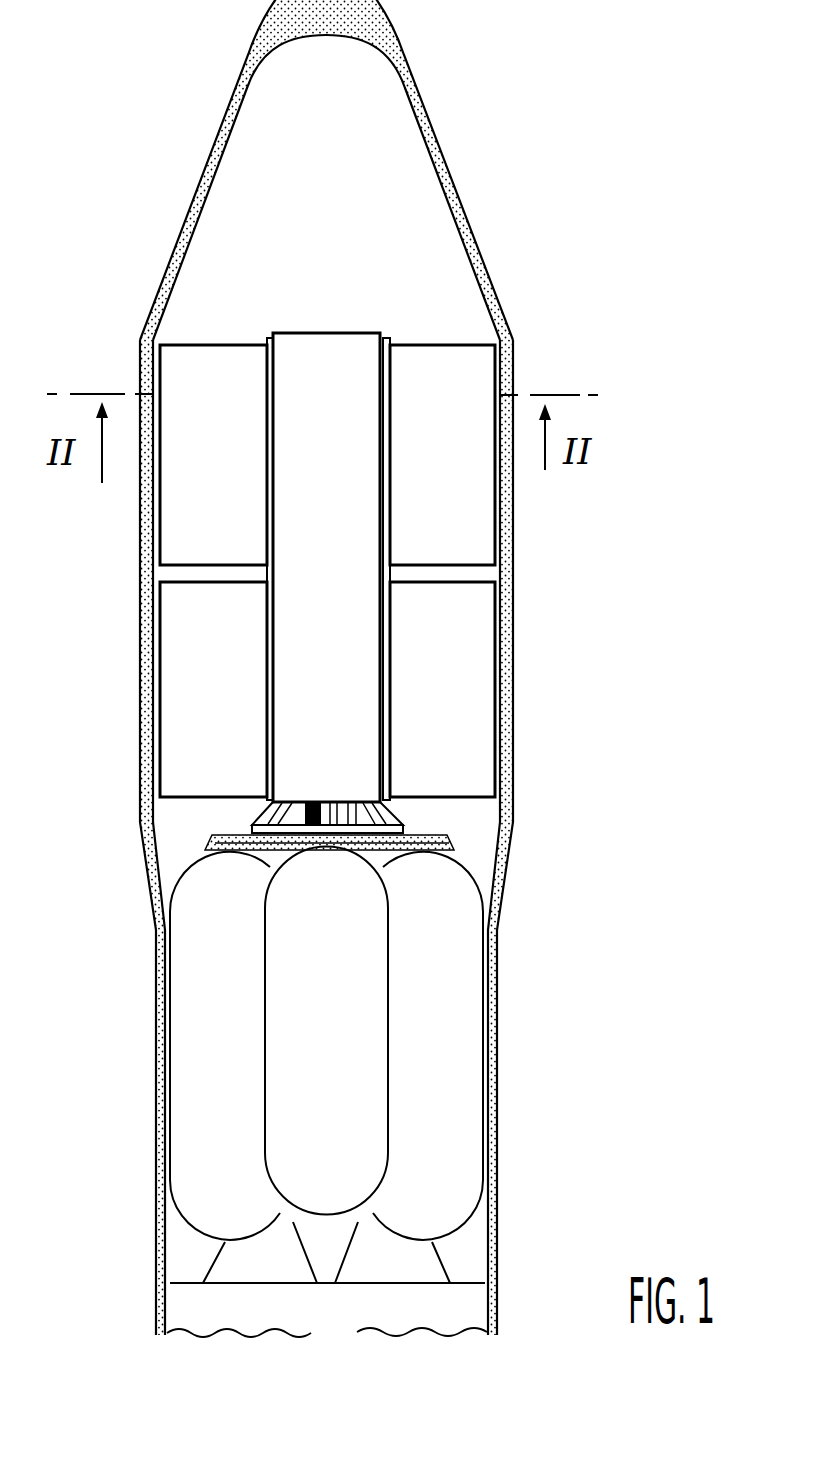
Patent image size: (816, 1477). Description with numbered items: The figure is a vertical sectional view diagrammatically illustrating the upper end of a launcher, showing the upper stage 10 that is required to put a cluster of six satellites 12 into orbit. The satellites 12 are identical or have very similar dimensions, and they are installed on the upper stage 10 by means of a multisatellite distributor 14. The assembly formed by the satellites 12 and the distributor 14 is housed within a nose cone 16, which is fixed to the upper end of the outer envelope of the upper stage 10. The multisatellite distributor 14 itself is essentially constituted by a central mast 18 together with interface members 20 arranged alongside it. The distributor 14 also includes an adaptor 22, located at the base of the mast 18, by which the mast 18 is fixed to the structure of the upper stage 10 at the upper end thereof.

The upper stage 10 is at (152, 1033).
The satellites 12 is at (183, 600).
The multisatellite distributor 14 is at (301, 300).
The nose cone 16 is at (430, 117).
The mast 18 is at (356, 347).
The interface members 20 is at (268, 388).
The adaptor 22 is at (330, 833).